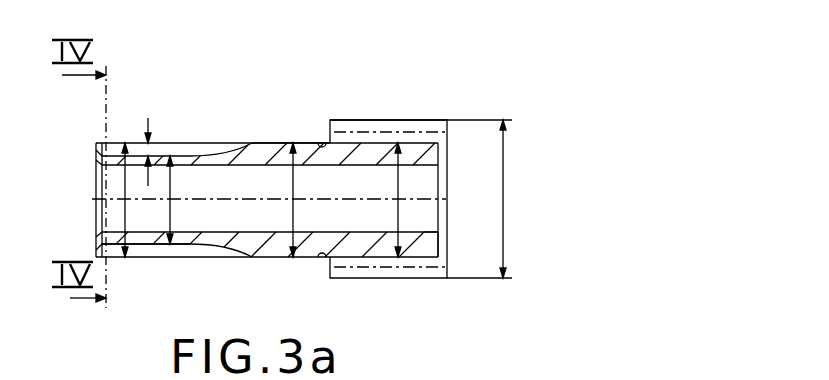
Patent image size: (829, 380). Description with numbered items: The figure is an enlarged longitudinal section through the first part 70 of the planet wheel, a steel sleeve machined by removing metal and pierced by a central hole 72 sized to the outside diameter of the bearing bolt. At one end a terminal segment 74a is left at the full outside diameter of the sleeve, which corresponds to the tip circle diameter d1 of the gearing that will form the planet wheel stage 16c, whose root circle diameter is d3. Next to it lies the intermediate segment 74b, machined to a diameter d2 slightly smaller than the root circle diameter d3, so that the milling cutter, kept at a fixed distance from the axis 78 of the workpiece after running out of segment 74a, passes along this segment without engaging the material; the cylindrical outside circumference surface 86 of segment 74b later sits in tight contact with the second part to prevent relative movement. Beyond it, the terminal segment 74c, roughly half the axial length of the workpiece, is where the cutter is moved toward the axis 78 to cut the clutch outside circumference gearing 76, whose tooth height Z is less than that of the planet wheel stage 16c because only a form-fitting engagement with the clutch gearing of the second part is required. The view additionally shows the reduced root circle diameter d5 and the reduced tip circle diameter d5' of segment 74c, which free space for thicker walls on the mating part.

The first part 70 is at (233, 143).
The hole 72 is at (435, 226).
The terminal segment 74a is at (362, 120).
The intermediate segment 74b is at (272, 142).
The terminal segment 74c is at (193, 141).
The clutch outside circumference gearing 76 is at (153, 247).
The axis 78 is at (428, 190).
The cylindrical outside circumference surface 86 is at (320, 141).
The planet wheel stage 16c is at (403, 119).
The tooth height Z is at (143, 149).
The tip circle diameter d1 is at (479, 199).
The diameter d2 is at (279, 200).
The root circle diameter d3 is at (381, 200).
The root circle diameter d5 is at (156, 200).
The tip circle diameter d5' is at (89, 200).